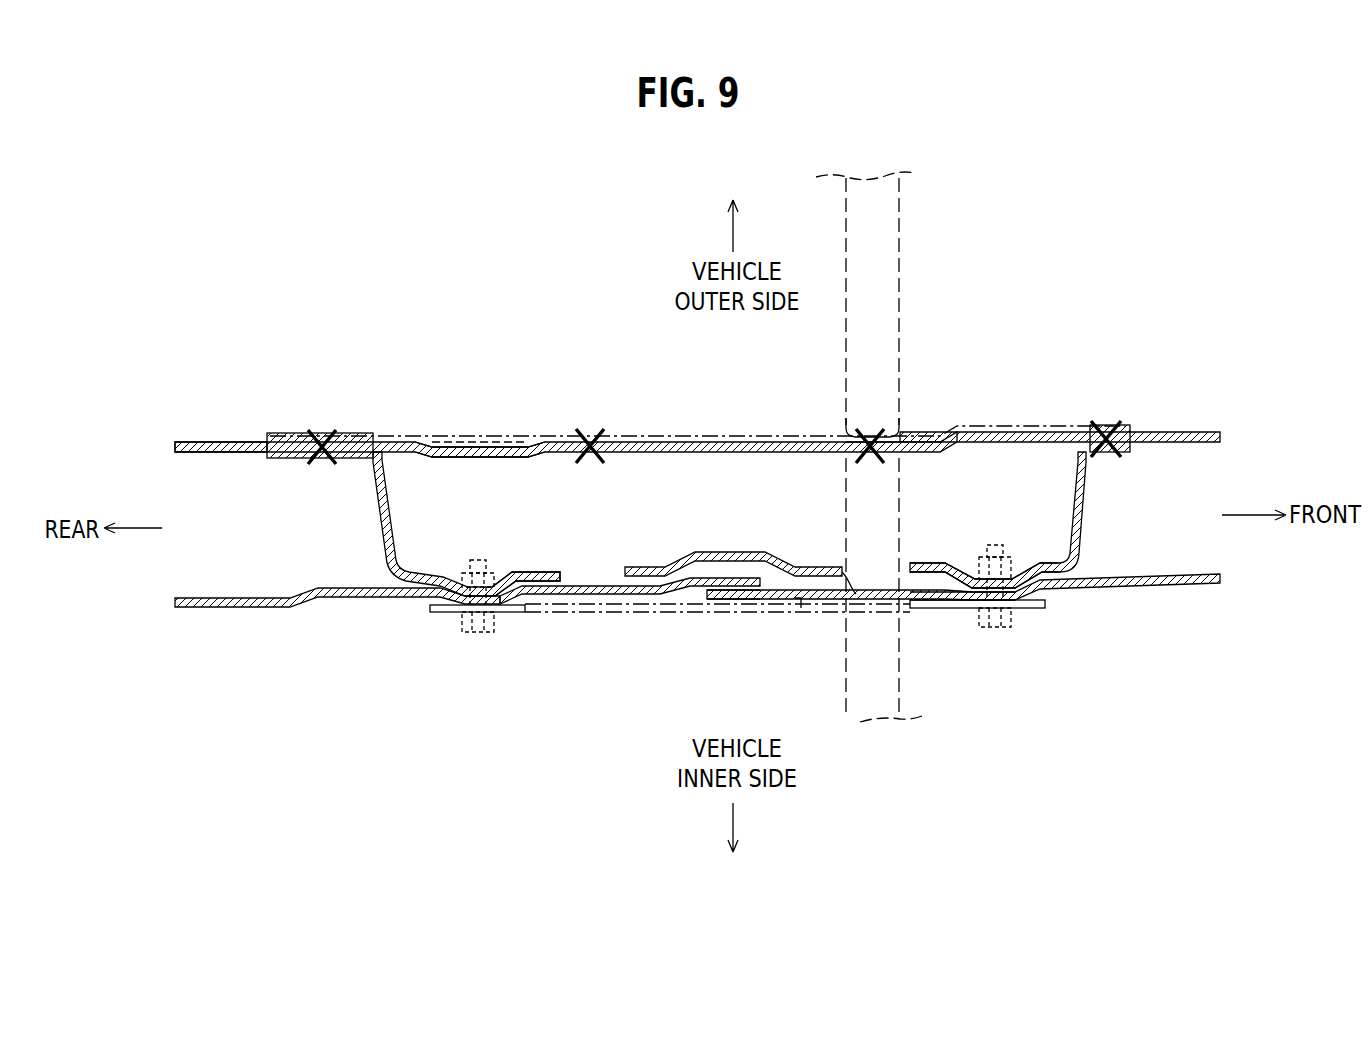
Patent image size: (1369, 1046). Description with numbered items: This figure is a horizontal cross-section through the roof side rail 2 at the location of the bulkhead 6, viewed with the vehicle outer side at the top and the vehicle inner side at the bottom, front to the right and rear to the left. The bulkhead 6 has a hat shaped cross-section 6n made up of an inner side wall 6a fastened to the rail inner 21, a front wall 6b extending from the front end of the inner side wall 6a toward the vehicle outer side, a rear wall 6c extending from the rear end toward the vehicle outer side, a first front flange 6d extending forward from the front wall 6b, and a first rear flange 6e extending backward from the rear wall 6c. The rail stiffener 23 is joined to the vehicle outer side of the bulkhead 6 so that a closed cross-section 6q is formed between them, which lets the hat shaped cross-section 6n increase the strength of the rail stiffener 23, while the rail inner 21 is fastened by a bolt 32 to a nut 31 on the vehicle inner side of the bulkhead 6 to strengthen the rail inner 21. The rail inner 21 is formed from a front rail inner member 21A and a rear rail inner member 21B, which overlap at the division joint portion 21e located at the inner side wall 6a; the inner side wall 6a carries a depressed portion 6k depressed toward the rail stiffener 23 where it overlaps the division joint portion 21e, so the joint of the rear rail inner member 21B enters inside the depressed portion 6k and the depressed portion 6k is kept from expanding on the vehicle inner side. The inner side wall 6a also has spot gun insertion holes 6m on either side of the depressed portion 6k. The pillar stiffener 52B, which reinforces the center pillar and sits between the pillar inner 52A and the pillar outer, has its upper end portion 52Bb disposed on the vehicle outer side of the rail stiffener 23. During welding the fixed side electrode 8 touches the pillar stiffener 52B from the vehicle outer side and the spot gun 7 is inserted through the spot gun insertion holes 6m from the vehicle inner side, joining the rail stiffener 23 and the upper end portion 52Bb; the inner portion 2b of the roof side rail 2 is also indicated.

The roof side rail 2 is at (218, 431).
The side sill inner portion 2b is at (685, 632).
The bulkhead 6 is at (362, 518).
The inner side wall 6a is at (733, 551).
The front wall 6b is at (1073, 500).
The rear wall 6c is at (392, 522).
The first front flange 6d is at (1128, 456).
The first rear flange 6e is at (300, 460).
The depressed portion 6k is at (801, 608).
The spot gun insertion holes 6m is at (610, 592).
The hat shaped cross-section 6n is at (542, 533).
The closed cross-section 6q is at (838, 437).
The spot gun 7 is at (905, 688).
The fixed side electrode 8 is at (900, 222).
The rail inner 21 is at (584, 600).
The front rail inner member 21A is at (1148, 590).
The rear rail inner member 21B is at (356, 598).
The division joint portion 21e is at (746, 604).
The rail stiffener 23 is at (352, 433).
The nut 31 is at (978, 580).
The bolt 32 is at (1000, 630).
The pillar inner 52A is at (1033, 608).
The pillar stiffener 52B is at (975, 428).
The upper end portion 52Bb is at (938, 425).